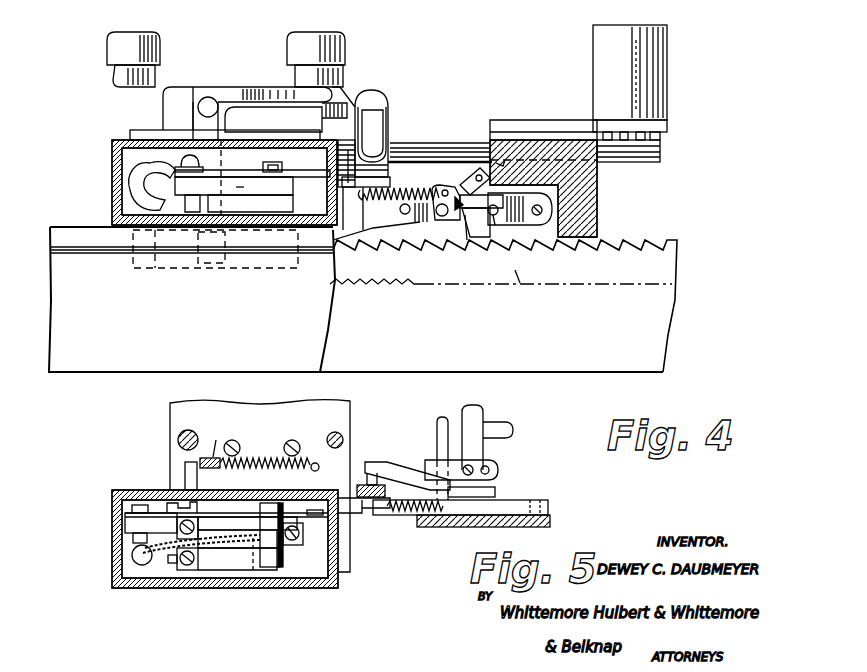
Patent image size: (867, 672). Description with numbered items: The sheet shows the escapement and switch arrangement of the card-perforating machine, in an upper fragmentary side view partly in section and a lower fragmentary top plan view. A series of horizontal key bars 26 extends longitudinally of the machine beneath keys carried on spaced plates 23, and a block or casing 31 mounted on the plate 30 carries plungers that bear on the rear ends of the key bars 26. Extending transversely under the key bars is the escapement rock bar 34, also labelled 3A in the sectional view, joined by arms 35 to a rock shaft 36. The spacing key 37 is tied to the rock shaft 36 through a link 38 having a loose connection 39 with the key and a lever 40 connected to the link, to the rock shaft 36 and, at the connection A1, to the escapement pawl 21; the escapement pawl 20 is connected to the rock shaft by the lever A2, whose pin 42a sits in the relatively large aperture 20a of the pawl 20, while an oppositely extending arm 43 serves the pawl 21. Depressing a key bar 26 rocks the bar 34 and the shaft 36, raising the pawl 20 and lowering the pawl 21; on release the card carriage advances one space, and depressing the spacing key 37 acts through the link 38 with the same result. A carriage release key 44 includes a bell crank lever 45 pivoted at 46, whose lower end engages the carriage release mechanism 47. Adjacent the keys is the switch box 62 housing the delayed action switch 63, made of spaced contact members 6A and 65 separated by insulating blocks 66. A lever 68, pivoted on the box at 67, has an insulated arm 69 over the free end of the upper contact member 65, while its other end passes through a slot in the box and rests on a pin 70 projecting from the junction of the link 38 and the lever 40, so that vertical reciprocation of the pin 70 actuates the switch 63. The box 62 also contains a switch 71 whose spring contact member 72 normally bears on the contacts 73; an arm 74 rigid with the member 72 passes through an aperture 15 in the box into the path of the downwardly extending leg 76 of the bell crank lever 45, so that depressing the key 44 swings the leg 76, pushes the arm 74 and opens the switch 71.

In FIG. 4, the escapement pawl 20 is at (409, 214).
In FIG. 4, the aperture in pawl 20a is at (401, 222).
In FIG. 4, the escapement pawl 21 is at (545, 222).
In FIG. 5, the spaced plates 23 is at (342, 413).
In FIG. 4, the key bars 26 is at (444, 153).
In FIG. 4, the plate 30 is at (667, 127).
In FIG. 4, the block or casing 31 is at (652, 80).
In FIG. 4, the escapement rock bar 34 is at (500, 166).
In FIG. 5, the escapement rock bar 34 is at (507, 428).
In FIG. 4, the escapement rock bar 3A is at (500, 163).
In FIG. 4, the arms 35 is at (462, 190).
In FIG. 4, the rock shaft 36 is at (470, 210).
In FIG. 4, the spacing key 37 is at (166, 43).
In FIG. 4, the link 38 is at (392, 150).
In FIG. 5, the link 38 is at (365, 508).
In FIG. 4, the loose connection 39 is at (384, 117).
In FIG. 4, the lever 40 is at (398, 194).
In FIG. 4, the connection to escapement pawl A1 is at (495, 215).
In FIG. 5, the connection to escapement pawl A1 is at (487, 512).
In FIG. 4, the lever A2 is at (467, 217).
In FIG. 4, the pin 42a is at (419, 226).
In FIG. 4, the arm 43 is at (497, 216).
In FIG. 4, the carriage release key 44 is at (347, 47).
In FIG. 4, the bell crank lever 45 is at (193, 122).
In FIG. 5, the bell crank lever 45 is at (200, 459).
In FIG. 4, the pivot 46 is at (212, 100).
In FIG. 4, the carriage release mechanism 47 is at (185, 270).
In FIG. 4, the switch box 62 is at (112, 172).
In FIG. 5, the switch box 62 is at (112, 537).
In FIG. 4, the secondary or delayed action switch 63 is at (287, 188).
In FIG. 4, the contact member 6A is at (240, 188).
In FIG. 4, the upper spring contact member 65 is at (244, 187).
In FIG. 4, the insulating blocks 66 is at (183, 183).
In FIG. 4, the pivot 67 is at (334, 132).
In FIG. 4, the lever 68 is at (366, 190).
In FIG. 5, the lever 68 is at (357, 508).
In FIG. 4, the insulated arm 69 is at (284, 167).
In FIG. 4, the pin 70 is at (378, 232).
In FIG. 5, the switch 71 is at (247, 517).
In FIG. 5, the spring contact member 72 is at (213, 517).
In FIG. 5, the contacts 73 is at (243, 523).
In FIG. 5, the arm 74 is at (180, 505).
In FIG. 5, the aperture 15 is at (214, 457).
In FIG. 4, the downwardly extending leg 76 is at (213, 133).
In FIG. 5, the downwardly extending leg 76 is at (247, 460).